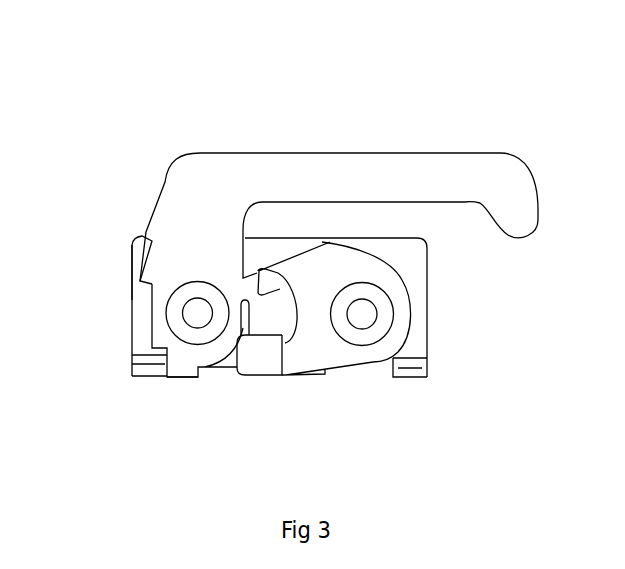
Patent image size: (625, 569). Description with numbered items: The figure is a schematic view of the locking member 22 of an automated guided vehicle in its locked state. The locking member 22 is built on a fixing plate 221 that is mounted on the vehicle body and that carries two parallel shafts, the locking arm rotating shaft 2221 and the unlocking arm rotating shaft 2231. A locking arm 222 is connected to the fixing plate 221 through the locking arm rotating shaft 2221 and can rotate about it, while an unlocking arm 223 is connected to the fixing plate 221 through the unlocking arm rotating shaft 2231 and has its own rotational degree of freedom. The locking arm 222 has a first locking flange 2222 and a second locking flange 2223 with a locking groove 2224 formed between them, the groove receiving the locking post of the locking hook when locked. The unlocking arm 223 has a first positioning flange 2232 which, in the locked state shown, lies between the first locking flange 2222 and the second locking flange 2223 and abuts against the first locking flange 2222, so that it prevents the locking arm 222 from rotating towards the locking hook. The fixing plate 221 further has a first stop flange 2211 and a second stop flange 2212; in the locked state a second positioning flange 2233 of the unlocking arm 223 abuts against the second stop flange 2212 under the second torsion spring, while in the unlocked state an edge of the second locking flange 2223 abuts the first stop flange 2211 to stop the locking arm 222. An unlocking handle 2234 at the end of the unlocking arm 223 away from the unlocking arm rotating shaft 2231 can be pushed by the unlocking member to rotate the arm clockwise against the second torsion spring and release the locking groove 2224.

The locking member 22 is at (530, 46).
The fixing plate 221 is at (417, 275).
The first stop flange 2211 is at (427, 370).
The second stop flange 2212 is at (137, 373).
The locking arm 222 is at (402, 320).
The locking arm rotating shaft 2221 is at (363, 328).
The first locking flange 2222 is at (282, 291).
The second locking flange 2223 is at (250, 328).
The locking groove 2224 is at (278, 285).
The unlocking arm 223 is at (155, 312).
The unlocking arm rotating shaft 2231 is at (187, 308).
The first positioning flange 2232 is at (245, 294).
The second positioning flange 2233 is at (183, 370).
The unlocking handle 2234 is at (465, 178).